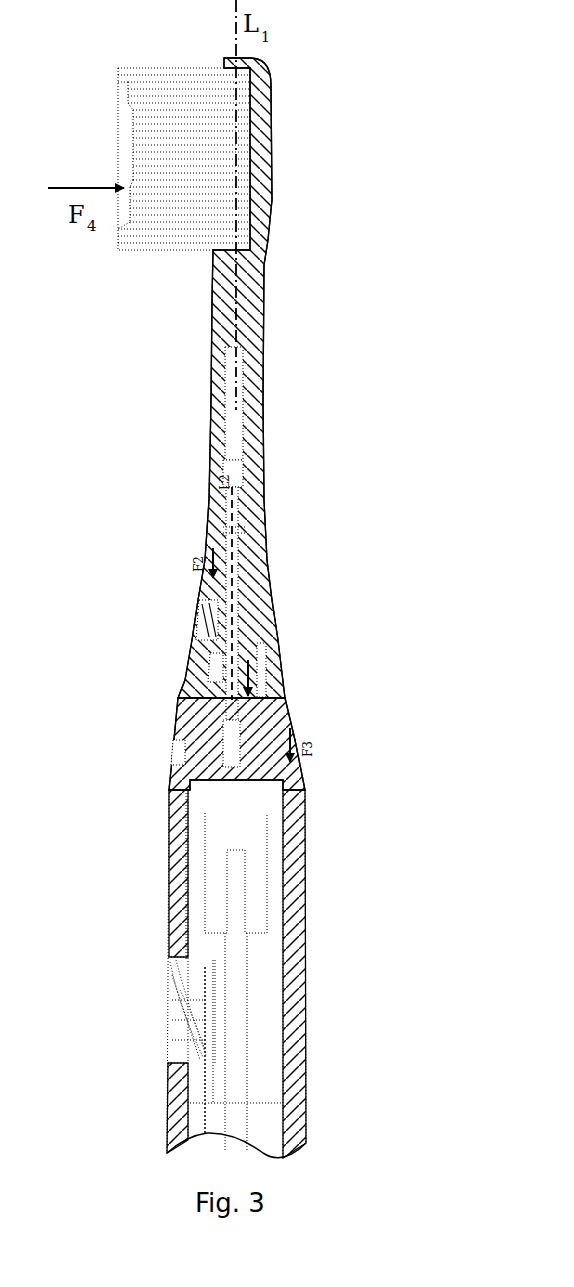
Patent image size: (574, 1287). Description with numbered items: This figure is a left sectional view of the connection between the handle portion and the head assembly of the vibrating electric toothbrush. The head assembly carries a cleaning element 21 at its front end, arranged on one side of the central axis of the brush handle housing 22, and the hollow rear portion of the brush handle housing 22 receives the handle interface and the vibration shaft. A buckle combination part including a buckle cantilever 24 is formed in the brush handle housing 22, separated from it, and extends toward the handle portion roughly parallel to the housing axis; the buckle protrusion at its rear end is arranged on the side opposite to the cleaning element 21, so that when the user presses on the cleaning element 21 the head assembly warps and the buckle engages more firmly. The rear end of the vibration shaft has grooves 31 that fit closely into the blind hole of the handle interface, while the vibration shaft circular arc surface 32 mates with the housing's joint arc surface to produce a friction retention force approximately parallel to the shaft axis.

The cleaning element 21 is at (155, 168).
The brush handle housing 22 is at (213, 414).
The buckle cantilever 24 is at (247, 652).
The groove of vibration shaft 31 is at (228, 733).
The vibration shaft circular arc surface 32 is at (223, 600).